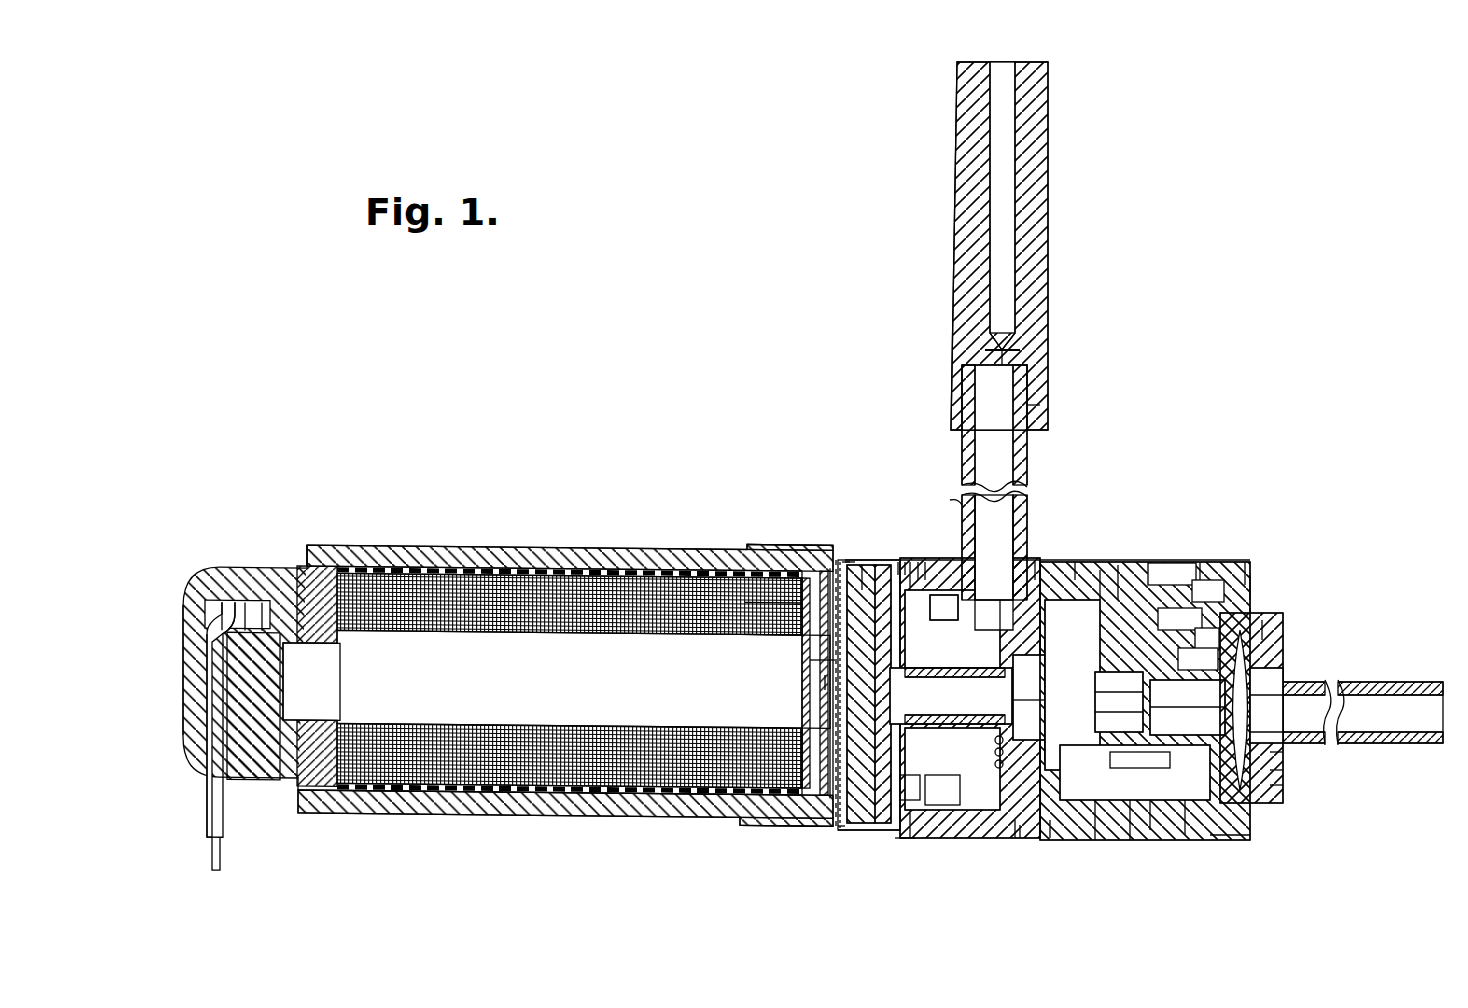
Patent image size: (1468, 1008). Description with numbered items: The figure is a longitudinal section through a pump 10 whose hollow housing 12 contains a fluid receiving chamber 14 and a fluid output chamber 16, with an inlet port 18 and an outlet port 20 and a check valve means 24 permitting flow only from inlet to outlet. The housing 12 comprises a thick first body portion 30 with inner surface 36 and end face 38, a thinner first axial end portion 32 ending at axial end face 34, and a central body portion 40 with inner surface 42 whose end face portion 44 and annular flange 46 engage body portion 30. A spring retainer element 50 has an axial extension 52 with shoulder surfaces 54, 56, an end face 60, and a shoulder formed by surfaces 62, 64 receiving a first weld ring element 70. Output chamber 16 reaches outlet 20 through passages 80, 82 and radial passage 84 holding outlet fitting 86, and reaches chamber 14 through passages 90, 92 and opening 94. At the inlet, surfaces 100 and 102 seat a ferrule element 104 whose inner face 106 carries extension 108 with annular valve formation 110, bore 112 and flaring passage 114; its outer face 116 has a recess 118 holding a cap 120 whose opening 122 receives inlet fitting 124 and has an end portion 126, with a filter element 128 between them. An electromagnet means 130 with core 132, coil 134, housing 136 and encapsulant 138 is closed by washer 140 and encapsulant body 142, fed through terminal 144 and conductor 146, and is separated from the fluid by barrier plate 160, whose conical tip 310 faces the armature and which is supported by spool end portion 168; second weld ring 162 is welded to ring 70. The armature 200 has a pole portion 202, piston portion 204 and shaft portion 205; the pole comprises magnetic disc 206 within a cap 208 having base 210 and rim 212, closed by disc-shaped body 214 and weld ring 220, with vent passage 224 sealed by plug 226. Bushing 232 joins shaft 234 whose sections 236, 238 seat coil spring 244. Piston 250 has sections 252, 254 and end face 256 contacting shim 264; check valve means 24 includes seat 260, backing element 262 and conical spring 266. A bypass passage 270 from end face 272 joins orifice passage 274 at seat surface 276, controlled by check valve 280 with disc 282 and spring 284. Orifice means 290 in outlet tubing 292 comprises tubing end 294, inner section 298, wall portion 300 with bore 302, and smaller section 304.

The pump 10 is at (745, 442).
The housing 12 is at (845, 548).
The fluid receiving chamber 14 is at (1175, 640).
The fluid output chamber 16 is at (838, 560).
The inlet port 18 is at (1310, 712).
The outlet port 20 is at (1000, 556).
The check valve means 24 is at (1208, 591).
The first body portion 30 is at (1185, 560).
The first axial end portion 32 is at (1247, 565).
The axial end face 34 is at (1250, 575).
The inner surface 36 is at (1118, 565).
The end face 38 is at (1065, 586).
The central body portion 40 is at (1035, 562).
The inner surface 42 is at (945, 552).
The first axial end face portion 44 is at (1040, 562).
The annular flange 46 is at (1075, 562).
The spring retainer element 50 is at (925, 560).
The axial extension 52 is at (950, 876).
The axial surface 54 is at (997, 607).
The cylindrical surface 56 is at (996, 621).
The axial end face 60 is at (918, 560).
The cylindrical surface 62 is at (906, 560).
The axial surface 64 is at (900, 560).
The first weld ring element 70 is at (872, 560).
The axial passage 80 is at (952, 628).
The longitudinal passage 82 is at (994, 579).
The radial passage 84 is at (990, 560).
The outlet fitting 86 is at (950, 500).
The axial passage 90 is at (911, 787).
The longitudinal passage 92 is at (952, 769).
The radial opening 94 is at (1011, 758).
The inner annular end face 100 is at (1250, 610).
The inner surface 102 is at (1255, 590).
The ferrule element 104 is at (1276, 626).
The inner axial end face 106 is at (1275, 640).
The axial extension 108 is at (1198, 659).
The annular valve formation 110 is at (1180, 696).
The central bore 112 is at (1228, 714).
The passage of increasing diameter 114 is at (1272, 680).
The outer axial end face 116 is at (1270, 660).
The cylindrical recess 118 is at (1278, 785).
The cap 120 is at (1280, 770).
The central opening 122 is at (1283, 752).
The inlet fitting 124 is at (1332, 690).
The end portion 126 is at (1274, 719).
The filter element 128 is at (1274, 699).
The electromagnet means 130 is at (395, 547).
The core 132 is at (556, 679).
The coil 134 is at (455, 575).
The hollow housing 136 is at (540, 550).
The sleeve-like body of encapsulant 138 is at (515, 575).
The washer 140 is at (315, 570).
The body of encapsulant 142 is at (245, 600).
The terminal 144 is at (222, 600).
The conductor 146 is at (207, 797).
The barrier plate 160 is at (815, 652).
The second weld ring 162 is at (760, 545).
The enlarged annular end portion 168 is at (825, 680).
The armature 200 is at (848, 834).
The pole portion 202 is at (850, 832).
The piston portion 204 is at (1095, 840).
The shaft portion 205 is at (905, 840).
The disc body 206 is at (850, 558).
The thin-walled cap 208 is at (846, 560).
The base 210 is at (815, 668).
The annular rim 212 is at (862, 560).
The disc-shaped body 214 is at (908, 838).
The weld ring 220 is at (915, 560).
The vent passage 224 is at (773, 601).
The plug 226 is at (773, 623).
The bushing 232 is at (951, 696).
The armature shaft 234 is at (955, 696).
The first section 236 is at (1031, 714).
The second section 238 is at (1031, 697).
The coil spring 244 is at (1015, 838).
The piston 250 is at (1097, 568).
The first section 252 is at (1062, 700).
The second section 254 is at (1119, 699).
The axial end face 256 is at (1119, 719).
The valve seat 260 is at (1180, 619).
The backing element 262 is at (1172, 574).
The shim 264 is at (1119, 702).
The biasing spring 266 is at (1200, 565).
The longitudinal passage 270 is at (1050, 838).
The end face 272 is at (1022, 838).
The radial passage 274 is at (1185, 838).
The annular valve seat surface 276 is at (1248, 826).
The check valve 280 is at (1115, 832).
The disc-shaped valve body 282 is at (1170, 830).
The conical biasing spring 284 is at (1130, 840).
The orifice providing means 290 is at (1055, 345).
The outlet tubing 292 is at (1050, 225).
The tubing end 294 is at (1040, 395).
The inner section 298 is at (1045, 412).
The wall portion 300 is at (962, 360).
The central bore 302 is at (958, 348).
The inner section 304 is at (985, 268).
The cone tip 310 is at (832, 698).